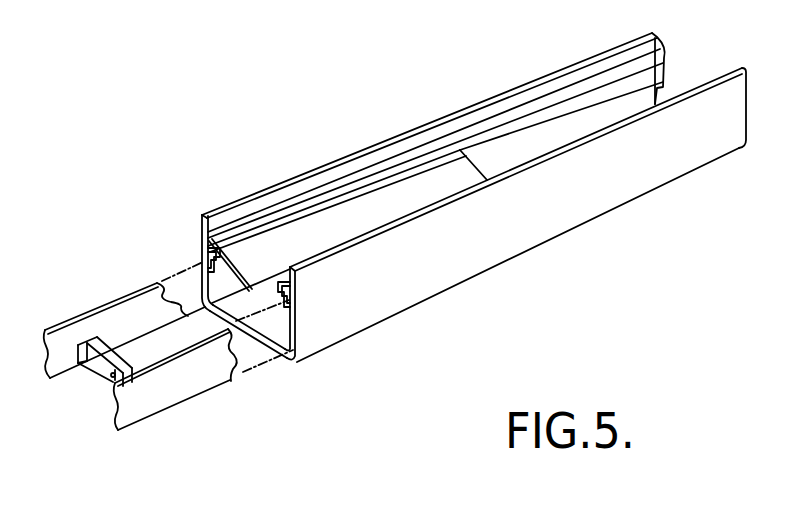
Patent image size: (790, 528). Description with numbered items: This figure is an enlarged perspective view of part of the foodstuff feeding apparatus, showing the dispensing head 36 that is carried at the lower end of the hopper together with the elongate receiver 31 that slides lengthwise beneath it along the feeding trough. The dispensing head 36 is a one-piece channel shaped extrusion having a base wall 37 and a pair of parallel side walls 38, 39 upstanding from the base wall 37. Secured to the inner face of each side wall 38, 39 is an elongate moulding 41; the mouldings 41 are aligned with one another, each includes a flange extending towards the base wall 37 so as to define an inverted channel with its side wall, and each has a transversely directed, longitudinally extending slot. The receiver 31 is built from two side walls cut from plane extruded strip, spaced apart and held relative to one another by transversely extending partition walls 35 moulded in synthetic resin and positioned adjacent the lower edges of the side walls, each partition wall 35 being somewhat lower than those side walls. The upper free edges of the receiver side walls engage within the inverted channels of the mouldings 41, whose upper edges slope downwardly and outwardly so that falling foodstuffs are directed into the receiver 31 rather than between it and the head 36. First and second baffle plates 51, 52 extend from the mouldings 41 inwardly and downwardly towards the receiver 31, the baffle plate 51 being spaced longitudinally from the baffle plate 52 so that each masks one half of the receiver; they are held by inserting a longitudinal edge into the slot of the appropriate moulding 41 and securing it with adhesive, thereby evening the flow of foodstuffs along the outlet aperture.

The elongate receiver 31 is at (182, 410).
The partition wall 35 is at (103, 369).
The dispensing head 36 is at (599, 224).
The base wall 37 is at (277, 360).
The side wall 38 is at (445, 275).
The side wall 39 is at (360, 148).
The elongate moulding 41 is at (207, 240).
The first baffle plate 51 is at (425, 187).
The second baffle plate 52 is at (690, 82).